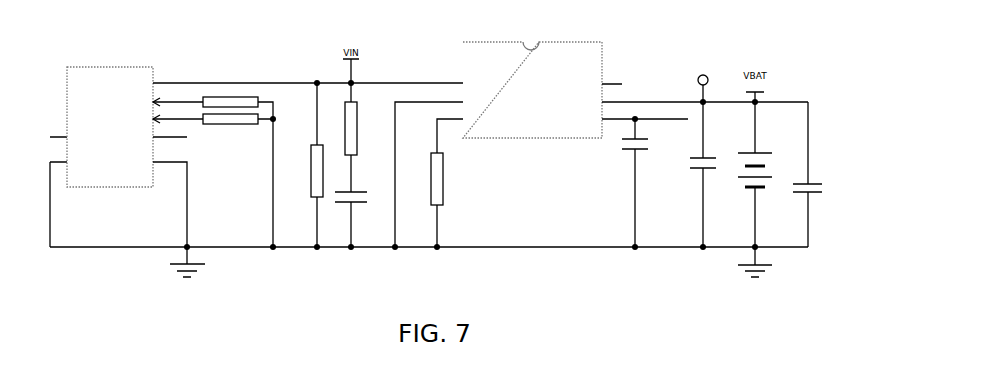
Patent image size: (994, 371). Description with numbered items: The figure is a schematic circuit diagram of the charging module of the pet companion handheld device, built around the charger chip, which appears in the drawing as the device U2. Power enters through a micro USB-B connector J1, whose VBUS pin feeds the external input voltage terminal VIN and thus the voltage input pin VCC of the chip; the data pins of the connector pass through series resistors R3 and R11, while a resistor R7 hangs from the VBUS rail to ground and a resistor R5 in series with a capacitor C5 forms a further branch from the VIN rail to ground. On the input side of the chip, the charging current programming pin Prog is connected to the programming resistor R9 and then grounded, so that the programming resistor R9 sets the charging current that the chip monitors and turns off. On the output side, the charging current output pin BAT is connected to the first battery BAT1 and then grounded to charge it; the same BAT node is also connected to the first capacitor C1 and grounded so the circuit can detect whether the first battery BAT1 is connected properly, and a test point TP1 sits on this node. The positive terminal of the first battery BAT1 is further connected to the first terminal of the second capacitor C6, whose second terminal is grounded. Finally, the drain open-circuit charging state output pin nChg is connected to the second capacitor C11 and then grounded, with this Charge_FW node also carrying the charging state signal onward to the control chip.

The micro USB-B connector J1 is at (264, 150).
The resistor R3 is at (245, 108).
The resistor R11 is at (238, 180).
The resistor R7 is at (305, 165).
The resistor R5 is at (358, 137).
The capacitor C5 is at (357, 219).
The programming resistor R9 is at (447, 183).
The LN2054 charger IC U2 is at (630, 82).
The second capacitor C11 is at (621, 183).
The test point TP1 is at (713, 88).
The first capacitor C1 is at (684, 174).
The first battery BAT1 is at (760, 174).
The second capacitor C6 is at (801, 174).